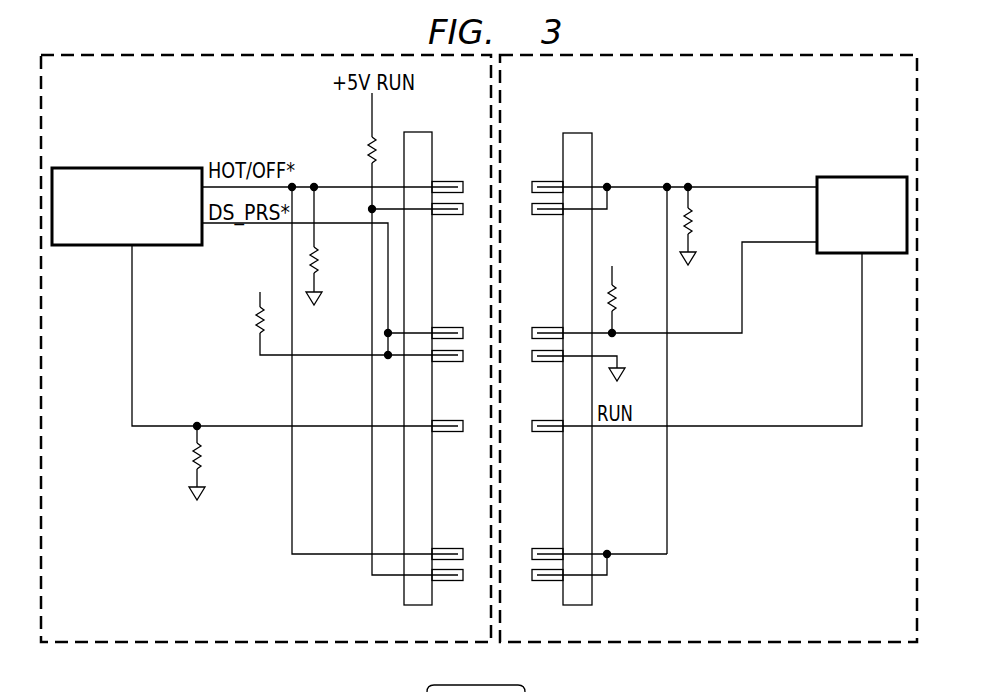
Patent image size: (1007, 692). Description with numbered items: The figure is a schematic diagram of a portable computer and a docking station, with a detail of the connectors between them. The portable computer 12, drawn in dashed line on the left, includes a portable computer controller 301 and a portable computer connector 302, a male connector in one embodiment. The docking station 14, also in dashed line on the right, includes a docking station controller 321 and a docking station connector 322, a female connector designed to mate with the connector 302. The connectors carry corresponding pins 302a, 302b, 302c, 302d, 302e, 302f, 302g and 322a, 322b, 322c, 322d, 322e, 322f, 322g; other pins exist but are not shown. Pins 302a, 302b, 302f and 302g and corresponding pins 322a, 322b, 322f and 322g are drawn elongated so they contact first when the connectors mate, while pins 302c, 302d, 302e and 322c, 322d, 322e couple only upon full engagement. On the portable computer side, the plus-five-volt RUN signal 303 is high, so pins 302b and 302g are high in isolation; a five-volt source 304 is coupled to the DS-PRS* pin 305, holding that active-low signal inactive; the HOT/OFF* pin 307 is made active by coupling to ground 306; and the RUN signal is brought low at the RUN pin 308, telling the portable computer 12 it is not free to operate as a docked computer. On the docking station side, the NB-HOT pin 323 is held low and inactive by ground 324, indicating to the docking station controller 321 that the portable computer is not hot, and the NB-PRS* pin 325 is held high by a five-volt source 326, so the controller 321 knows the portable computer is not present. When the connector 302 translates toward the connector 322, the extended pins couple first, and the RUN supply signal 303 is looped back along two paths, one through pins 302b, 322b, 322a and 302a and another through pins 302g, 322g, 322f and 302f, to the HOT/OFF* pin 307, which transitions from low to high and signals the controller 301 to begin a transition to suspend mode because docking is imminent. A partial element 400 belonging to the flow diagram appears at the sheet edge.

The portable computer 12 is at (103, 643).
The docking station 14 is at (847, 643).
The portable computer controller 301 is at (95, 168).
The portable computer connector 302 is at (425, 132).
The extended pin 302a is at (450, 182).
The extended pin 302b is at (452, 215).
The pin 302c is at (449, 328).
The pin 302d is at (452, 361).
The pin 302e is at (452, 432).
The extended pin 302f is at (448, 548).
The extended pin 302g is at (452, 580).
The +5VRUN signal 303 is at (372, 112).
The +5 V source 304 is at (258, 297).
The DS-PRS* pin 305 is at (216, 226).
The ground 306 is at (320, 290).
The HOT/OFF* pin 307 is at (313, 186).
The RUN pin 308 is at (132, 314).
The docking station controller 321 is at (862, 177).
The docking station connector 322 is at (582, 133).
The extended pin 322a is at (547, 182).
The extended pin 322b is at (538, 215).
The pin 322c is at (545, 328).
The pin 322d is at (540, 361).
The pin 322e is at (540, 432).
The extended pin 322f is at (545, 548).
The extended pin 322g is at (540, 580).
The NB-HOT pin 323 is at (713, 186).
The ground 324 is at (691, 244).
The NB-PRS* pin 325 is at (780, 243).
The +5 V source 326 is at (614, 272).
The flow chart start 400 is at (440, 686).